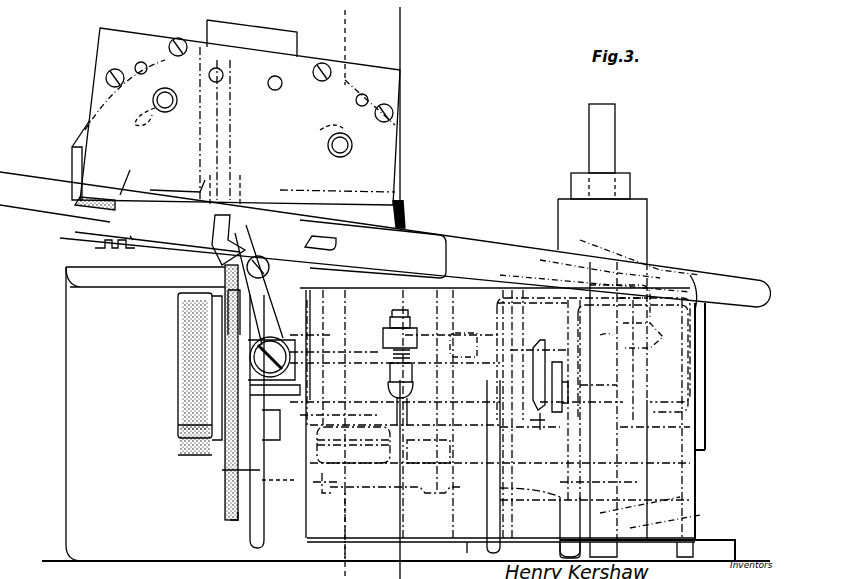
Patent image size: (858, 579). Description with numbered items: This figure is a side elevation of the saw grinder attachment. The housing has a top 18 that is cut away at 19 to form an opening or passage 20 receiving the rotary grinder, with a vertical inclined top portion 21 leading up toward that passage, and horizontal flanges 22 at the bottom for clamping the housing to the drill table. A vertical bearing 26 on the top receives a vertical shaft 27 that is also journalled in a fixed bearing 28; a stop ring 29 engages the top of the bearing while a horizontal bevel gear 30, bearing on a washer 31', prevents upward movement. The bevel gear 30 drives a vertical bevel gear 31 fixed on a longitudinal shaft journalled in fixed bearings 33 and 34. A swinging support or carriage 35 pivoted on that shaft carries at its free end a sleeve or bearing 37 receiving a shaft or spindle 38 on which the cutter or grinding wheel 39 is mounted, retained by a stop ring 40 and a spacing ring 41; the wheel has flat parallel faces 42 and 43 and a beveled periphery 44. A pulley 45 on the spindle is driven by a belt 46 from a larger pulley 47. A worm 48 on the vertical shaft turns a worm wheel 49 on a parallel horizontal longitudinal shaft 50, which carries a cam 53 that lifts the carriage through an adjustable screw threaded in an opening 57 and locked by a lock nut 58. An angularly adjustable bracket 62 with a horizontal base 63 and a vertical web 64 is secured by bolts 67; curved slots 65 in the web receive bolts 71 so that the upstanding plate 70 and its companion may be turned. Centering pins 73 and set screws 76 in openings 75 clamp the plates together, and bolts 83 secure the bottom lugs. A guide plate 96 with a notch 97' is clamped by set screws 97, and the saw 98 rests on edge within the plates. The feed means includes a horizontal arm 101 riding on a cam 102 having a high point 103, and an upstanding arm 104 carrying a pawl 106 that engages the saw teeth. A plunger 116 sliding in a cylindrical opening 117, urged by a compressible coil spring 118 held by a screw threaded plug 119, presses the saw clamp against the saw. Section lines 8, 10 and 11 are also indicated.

The section line 8 is at (29, 294).
The section line 10 is at (404, 11).
The section line 11 is at (345, 17).
The top 18 is at (492, 268).
The cut away 19 is at (90, 275).
The opening or passage 20 is at (307, 520).
The vertical inclined top portion 21 is at (460, 283).
The horizontal flanges 22 is at (467, 542).
The vertical bearing 26 is at (632, 245).
The vertical shaft 27 is at (606, 158).
The fixed bearing 28 is at (693, 519).
The stop ring 29 is at (622, 190).
The horizontal bevel gear 30 is at (631, 347).
The vertical bevel gear 31 is at (539, 360).
The bearing element or washer 31' is at (642, 273).
The fixed bearing 33 is at (285, 332).
The fixed bearing 34 is at (463, 322).
The swinging support or carriage 35 is at (432, 345).
The sleeve or bearing 37 is at (517, 440).
The shaft or spindle 38 is at (520, 440).
The cutter or grinding wheel 39 is at (218, 495).
The stop ring 40 is at (540, 413).
The spacing ring 41 is at (265, 445).
The flat face 42 is at (222, 470).
The flat face 43 is at (262, 466).
The periphery 44 is at (228, 520).
The pulley 45 is at (178, 428).
The belt 46 is at (190, 327).
The larger pulley 47 is at (178, 310).
The worm 48 is at (697, 415).
The worm wheel 49 is at (690, 498).
The horizontal longitudinal shaft 50 is at (447, 463).
The cam 53 is at (407, 493).
The opening 57 is at (400, 317).
The lock nut 58 is at (408, 335).
The horizontally angularly adjustable bracket 62 is at (75, 166).
The horizontal base 63 is at (100, 250).
The vertical web 64 is at (78, 151).
The circularly curved slots 65 is at (320, 134).
The bolts 67 is at (110, 240).
The upstanding plate 70 is at (97, 38).
The bolts 71 is at (330, 150).
The centering pins 73 is at (135, 66).
The openings 75 is at (422, 250).
The set screws 76 is at (175, 40).
The bolts 83 is at (408, 210).
The guide plate or element 96 is at (210, 30).
The set screws 97 is at (245, 74).
The notch 97' is at (239, 179).
The saw 98 is at (516, 262).
The horizontal arm 101 is at (250, 262).
The cam 102 is at (279, 483).
The high point 103 is at (330, 385).
The upstanding arm 104 is at (260, 300).
The pawl 106 is at (242, 255).
The plunger 116 is at (180, 190).
The cylindrical opening 117 is at (135, 171).
The compressible coil spring 118 is at (85, 207).
The screw threaded plug 119 is at (80, 187).